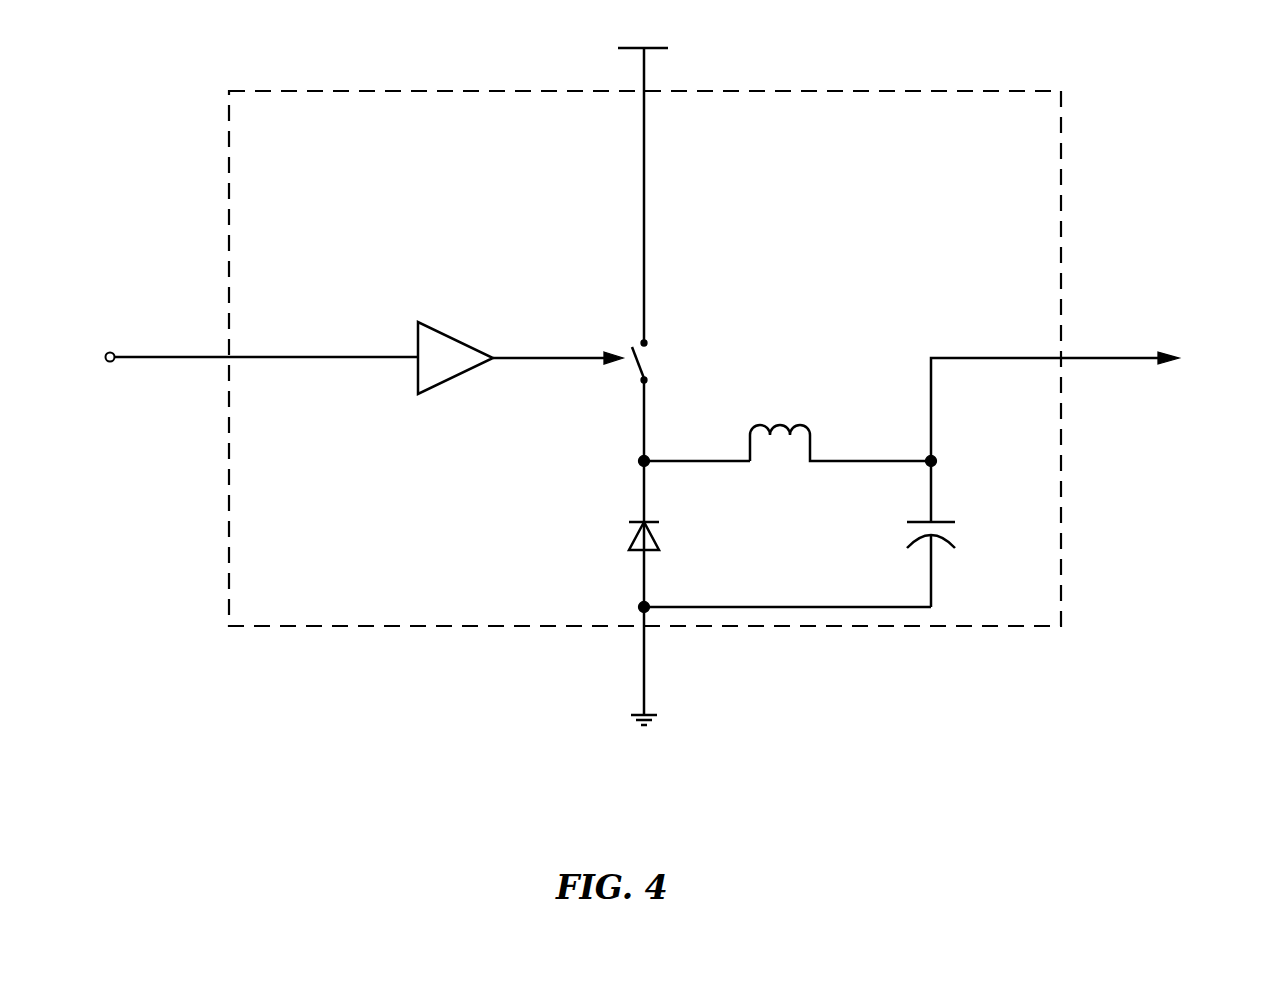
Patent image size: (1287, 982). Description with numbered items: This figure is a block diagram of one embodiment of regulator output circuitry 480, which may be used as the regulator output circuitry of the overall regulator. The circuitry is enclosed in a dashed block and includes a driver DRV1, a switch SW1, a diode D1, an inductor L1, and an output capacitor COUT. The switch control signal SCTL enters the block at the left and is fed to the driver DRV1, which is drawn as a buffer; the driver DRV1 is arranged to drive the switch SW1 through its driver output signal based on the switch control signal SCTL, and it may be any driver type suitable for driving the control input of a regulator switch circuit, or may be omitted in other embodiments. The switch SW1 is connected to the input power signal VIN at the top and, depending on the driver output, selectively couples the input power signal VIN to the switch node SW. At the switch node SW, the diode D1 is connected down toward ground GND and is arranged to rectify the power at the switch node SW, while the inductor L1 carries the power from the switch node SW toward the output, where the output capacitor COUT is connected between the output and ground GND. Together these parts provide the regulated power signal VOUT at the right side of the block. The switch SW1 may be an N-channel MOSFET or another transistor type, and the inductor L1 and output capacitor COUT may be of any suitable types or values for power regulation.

The regulator output circuitry 480 is at (983, 91).
The driver DRV1 is at (426, 324).
The switch SW1 is at (674, 400).
The switch node SW is at (652, 459).
The inductor L1 is at (840, 460).
The diode D1 is at (664, 534).
The output capacitor COUT is at (964, 534).
The input power signal VIN is at (644, 182).
The switch control signal SCTL is at (225, 358).
The regulated power signal VOUT is at (1096, 406).
The ground GND is at (781, 664).